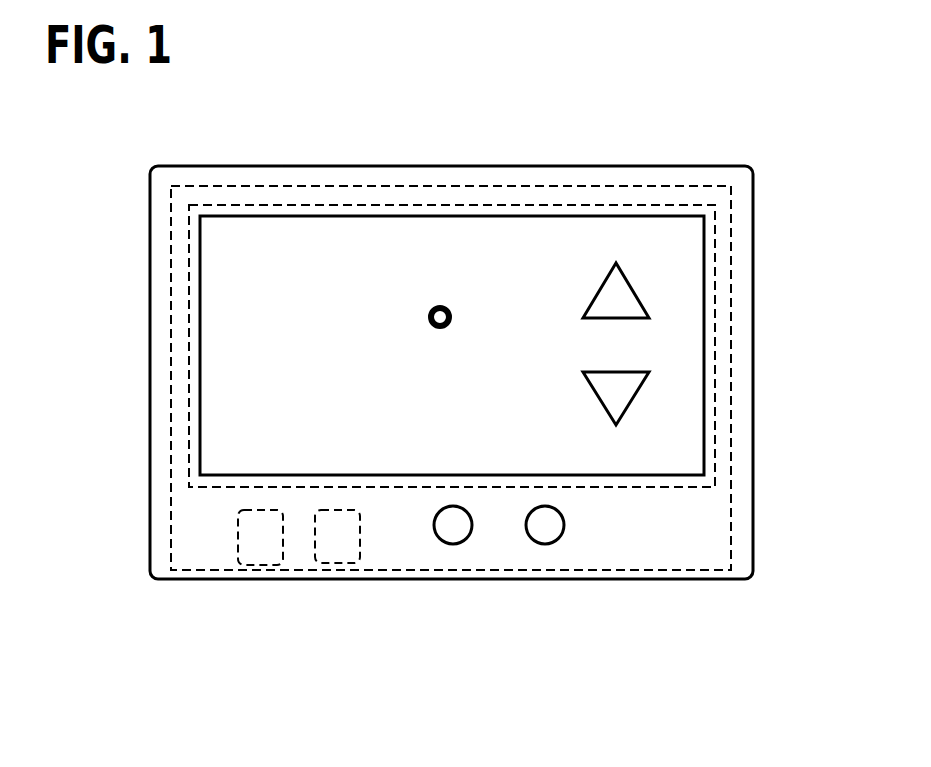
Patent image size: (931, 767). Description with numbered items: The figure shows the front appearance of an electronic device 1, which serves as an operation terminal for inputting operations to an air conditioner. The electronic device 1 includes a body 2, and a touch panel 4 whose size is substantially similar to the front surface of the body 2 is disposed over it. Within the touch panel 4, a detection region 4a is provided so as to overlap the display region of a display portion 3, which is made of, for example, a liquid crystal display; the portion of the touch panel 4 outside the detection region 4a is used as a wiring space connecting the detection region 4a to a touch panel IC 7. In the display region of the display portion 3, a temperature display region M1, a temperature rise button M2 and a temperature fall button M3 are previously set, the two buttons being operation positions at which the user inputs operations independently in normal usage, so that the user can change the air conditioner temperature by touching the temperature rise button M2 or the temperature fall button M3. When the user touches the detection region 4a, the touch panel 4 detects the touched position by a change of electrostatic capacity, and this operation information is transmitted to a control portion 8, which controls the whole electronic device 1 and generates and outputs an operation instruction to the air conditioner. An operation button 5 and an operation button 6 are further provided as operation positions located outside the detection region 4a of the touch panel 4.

The electronic device 1 is at (590, 136).
The body 2 is at (753, 214).
The display portion 3 is at (705, 287).
The touch panel 4 is at (731, 391).
The detection region 4a is at (715, 346).
The operation button 5 is at (453, 544).
The operation button 6 is at (545, 544).
The touch panel IC 7 is at (238, 536).
The control portion 8 is at (360, 531).
The temperature display region M1 is at (408, 288).
The temperature rise button M2 is at (595, 290).
The temperature fall button M3 is at (593, 395).